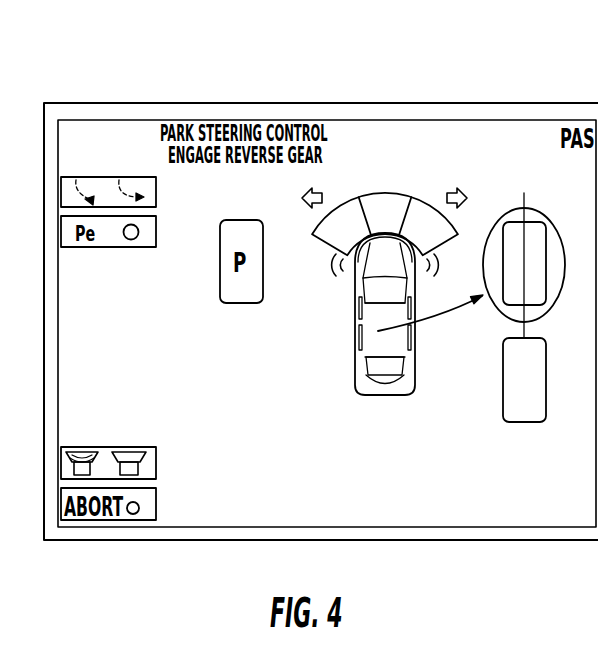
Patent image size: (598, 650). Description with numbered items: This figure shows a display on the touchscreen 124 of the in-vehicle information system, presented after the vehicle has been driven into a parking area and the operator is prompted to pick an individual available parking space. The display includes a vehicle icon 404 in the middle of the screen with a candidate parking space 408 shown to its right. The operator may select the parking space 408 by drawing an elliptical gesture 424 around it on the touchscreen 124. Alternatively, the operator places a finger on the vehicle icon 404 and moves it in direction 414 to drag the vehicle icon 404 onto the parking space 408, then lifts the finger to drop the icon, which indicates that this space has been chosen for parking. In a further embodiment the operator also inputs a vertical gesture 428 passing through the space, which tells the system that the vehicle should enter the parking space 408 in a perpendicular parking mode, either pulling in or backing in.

The touchscreen 124 is at (372, 103).
The vehicle icon 404 is at (355, 332).
The parking space 408 is at (502, 222).
The direction 414 is at (428, 322).
The elliptical gesture 424 is at (527, 208).
The vertical gesture 428 is at (520, 326).